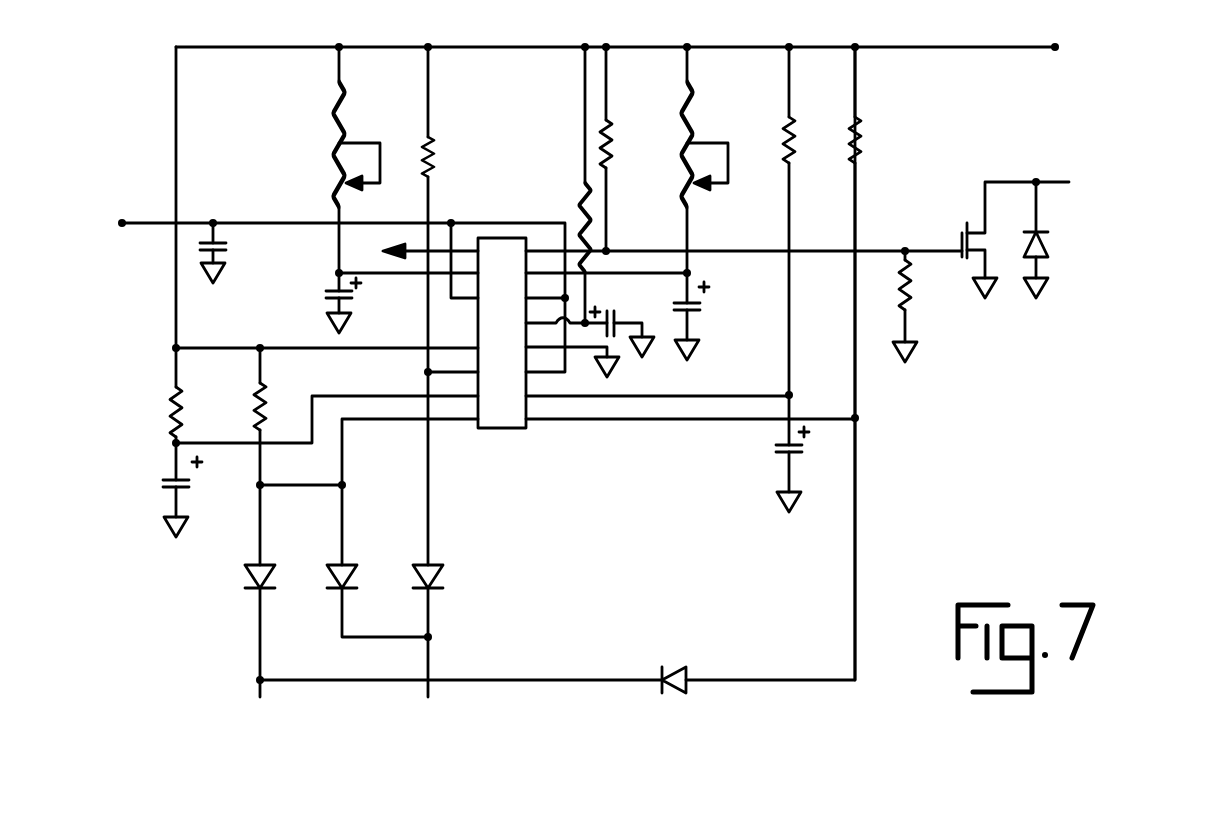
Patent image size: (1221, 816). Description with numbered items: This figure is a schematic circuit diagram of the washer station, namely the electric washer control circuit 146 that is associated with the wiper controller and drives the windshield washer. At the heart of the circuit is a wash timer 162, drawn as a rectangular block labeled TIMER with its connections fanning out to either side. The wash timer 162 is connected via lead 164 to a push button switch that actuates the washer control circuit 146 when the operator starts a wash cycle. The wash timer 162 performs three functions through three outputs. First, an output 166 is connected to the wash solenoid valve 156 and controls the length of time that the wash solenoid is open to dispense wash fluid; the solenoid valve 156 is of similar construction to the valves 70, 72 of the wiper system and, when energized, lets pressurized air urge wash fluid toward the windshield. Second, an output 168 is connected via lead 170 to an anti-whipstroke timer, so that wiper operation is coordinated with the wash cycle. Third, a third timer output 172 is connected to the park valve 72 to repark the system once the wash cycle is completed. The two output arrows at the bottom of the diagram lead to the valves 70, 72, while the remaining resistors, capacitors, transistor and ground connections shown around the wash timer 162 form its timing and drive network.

The washer control circuit 146 is at (1090, 332).
The solenoid valve 156 is at (1047, 228).
The wash timer 162 is at (502, 258).
The lead 164 is at (265, 222).
The output 166 is at (583, 249).
The output 168 is at (477, 249).
The lead 170 is at (415, 256).
The third timer output 172 is at (478, 347).
The valve 70 is at (428, 723).
The park valve 72 is at (260, 723).